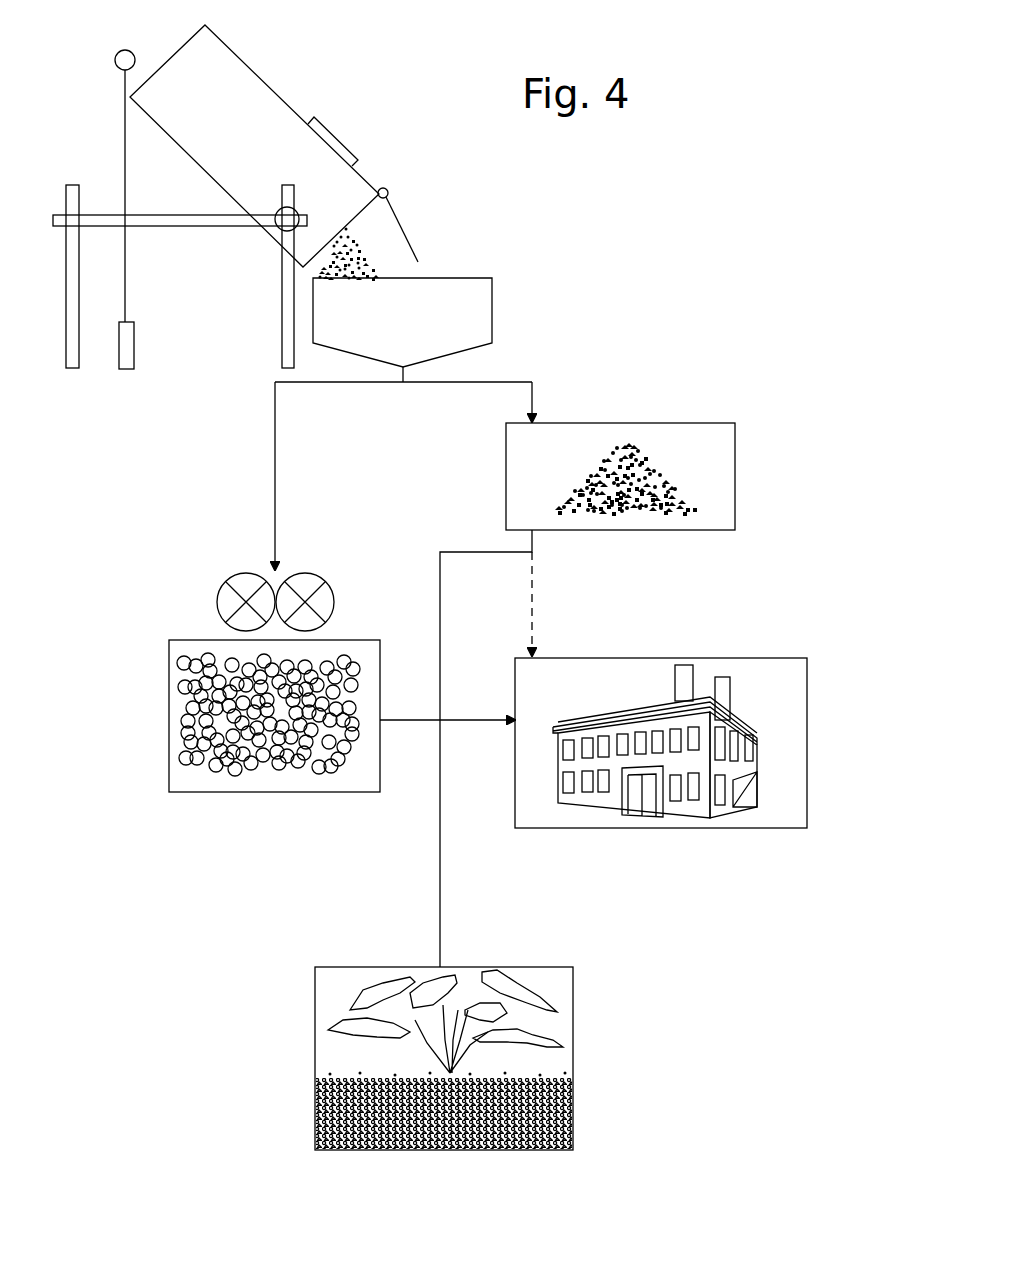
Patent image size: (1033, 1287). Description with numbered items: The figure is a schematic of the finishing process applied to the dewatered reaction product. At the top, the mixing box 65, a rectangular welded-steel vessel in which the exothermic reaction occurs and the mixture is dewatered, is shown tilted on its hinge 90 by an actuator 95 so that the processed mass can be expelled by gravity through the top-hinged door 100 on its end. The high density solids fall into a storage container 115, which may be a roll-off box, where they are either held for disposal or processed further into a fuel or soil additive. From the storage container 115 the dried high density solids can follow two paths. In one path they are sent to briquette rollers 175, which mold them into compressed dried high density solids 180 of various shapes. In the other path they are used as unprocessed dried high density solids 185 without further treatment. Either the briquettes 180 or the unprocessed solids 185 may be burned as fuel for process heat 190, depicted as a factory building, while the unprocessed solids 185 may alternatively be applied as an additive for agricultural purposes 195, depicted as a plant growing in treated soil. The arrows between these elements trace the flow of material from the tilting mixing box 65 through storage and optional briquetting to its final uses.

The mixing box 65 is at (260, 113).
The hinge 90 is at (273, 228).
The actuator 95 is at (126, 347).
The hinged door 100 is at (400, 227).
The storage container 115 is at (480, 307).
The briquette rollers 175 is at (333, 608).
The compressed dried high density solids 180 is at (275, 763).
The unprocessed dried high density solids 185 is at (713, 475).
The process heat 190 is at (710, 818).
The additive for agricultural purposes 195 is at (573, 1110).